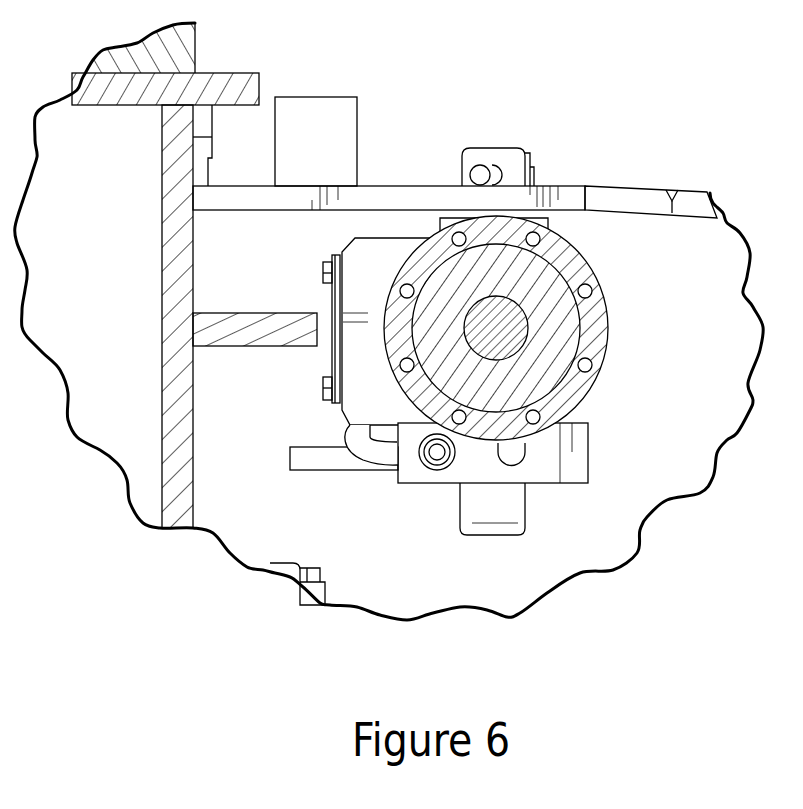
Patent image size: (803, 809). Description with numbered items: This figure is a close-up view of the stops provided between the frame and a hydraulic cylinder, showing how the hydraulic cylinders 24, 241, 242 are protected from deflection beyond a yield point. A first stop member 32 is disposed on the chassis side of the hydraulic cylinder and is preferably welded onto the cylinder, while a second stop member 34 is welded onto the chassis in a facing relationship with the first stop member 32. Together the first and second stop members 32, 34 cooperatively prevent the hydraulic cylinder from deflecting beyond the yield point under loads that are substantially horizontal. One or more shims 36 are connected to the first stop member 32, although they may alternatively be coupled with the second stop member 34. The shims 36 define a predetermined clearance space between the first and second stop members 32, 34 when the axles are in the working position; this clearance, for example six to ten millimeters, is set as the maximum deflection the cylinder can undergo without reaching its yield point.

The hydraulic cylinder 24 is at (558, 328).
The hydraulic cylinder 241 is at (558, 328).
The hydraulic cylinder 242 is at (670, 275).
The first stop member 32 is at (388, 255).
The second stop member 34 is at (248, 332).
The shim 36 is at (332, 298).